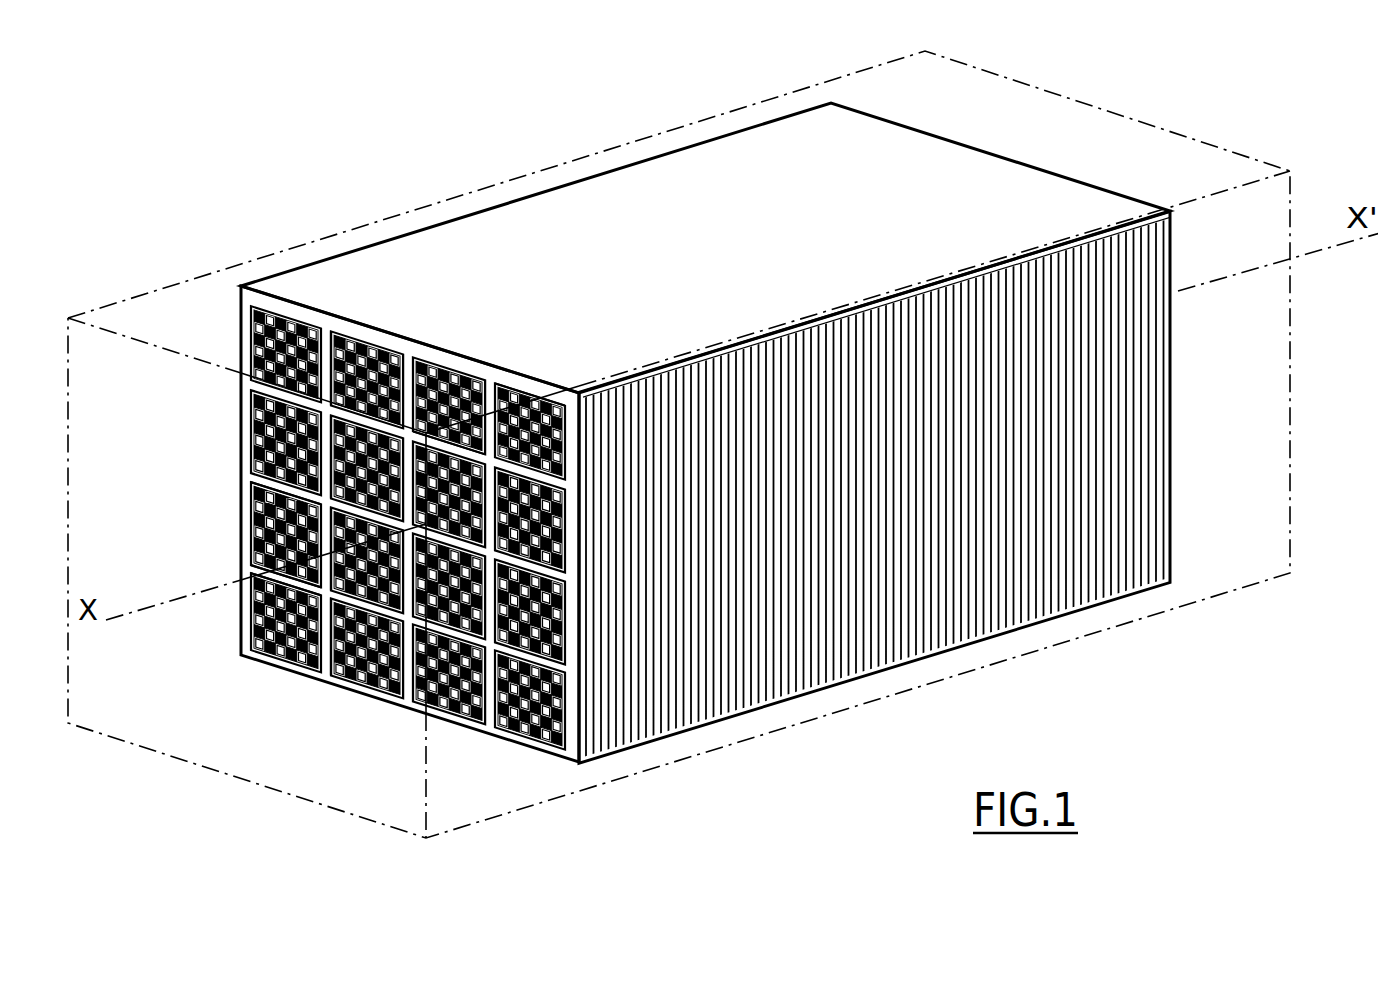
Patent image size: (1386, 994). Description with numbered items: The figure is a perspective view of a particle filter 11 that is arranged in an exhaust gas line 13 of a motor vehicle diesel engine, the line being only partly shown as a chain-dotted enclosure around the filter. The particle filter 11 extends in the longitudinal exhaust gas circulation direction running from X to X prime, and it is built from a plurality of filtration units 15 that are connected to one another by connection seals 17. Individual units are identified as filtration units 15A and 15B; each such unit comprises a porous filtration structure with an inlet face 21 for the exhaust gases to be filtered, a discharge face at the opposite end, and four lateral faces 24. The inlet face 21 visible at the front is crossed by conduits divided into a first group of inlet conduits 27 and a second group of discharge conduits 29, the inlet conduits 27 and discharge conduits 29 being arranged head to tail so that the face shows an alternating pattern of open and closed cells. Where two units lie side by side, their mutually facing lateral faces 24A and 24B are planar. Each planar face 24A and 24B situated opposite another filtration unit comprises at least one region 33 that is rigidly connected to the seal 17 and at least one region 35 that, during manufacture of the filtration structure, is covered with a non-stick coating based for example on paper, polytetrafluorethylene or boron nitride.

The particle filter 11 is at (303, 196).
The exhaust gas line 13 is at (135, 295).
The filtration unit 15 is at (408, 345).
The filtration unit 15A is at (250, 412).
The filtration unit 15B is at (250, 498).
The connection seal 17 is at (318, 323).
The inlet face 21 is at (455, 384).
The lateral face 24 is at (328, 340).
The lateral face 24A is at (244, 466).
The lateral face 24B is at (248, 562).
The inlet conduit 27 is at (502, 378).
The discharge conduit 29 is at (490, 375).
The region rigidly connected to the seal 33 is at (272, 300).
The region covered with non-stick coating 35 is at (241, 330).